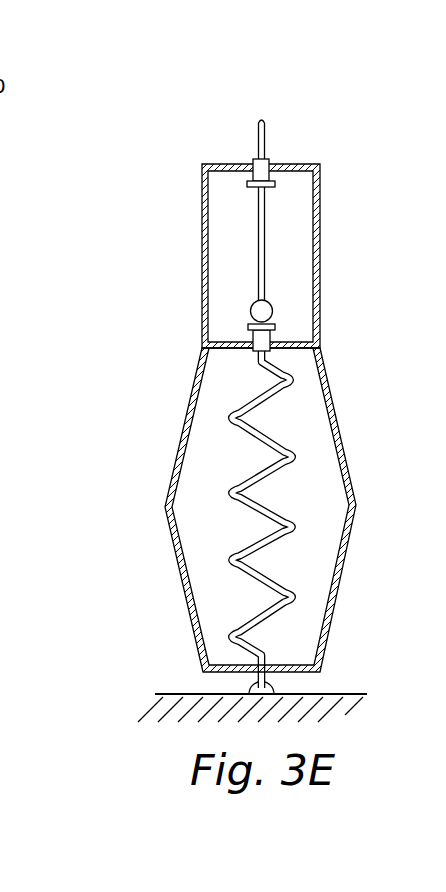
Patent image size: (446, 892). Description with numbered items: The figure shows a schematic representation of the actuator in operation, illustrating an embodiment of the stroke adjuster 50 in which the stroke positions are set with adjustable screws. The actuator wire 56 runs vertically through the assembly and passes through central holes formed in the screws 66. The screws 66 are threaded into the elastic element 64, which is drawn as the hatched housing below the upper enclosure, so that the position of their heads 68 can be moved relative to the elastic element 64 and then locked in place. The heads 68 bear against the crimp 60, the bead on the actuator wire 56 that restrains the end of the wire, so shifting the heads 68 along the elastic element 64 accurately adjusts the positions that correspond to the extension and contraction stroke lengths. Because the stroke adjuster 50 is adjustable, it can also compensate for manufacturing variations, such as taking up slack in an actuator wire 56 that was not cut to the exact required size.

The stroke adjuster 50 is at (367, 160).
The actuator wire 56 is at (258, 128).
The crimp 60 is at (266, 307).
The elastic element 64 is at (332, 612).
The screw 66 is at (280, 183).
The screw head 68 is at (247, 184).